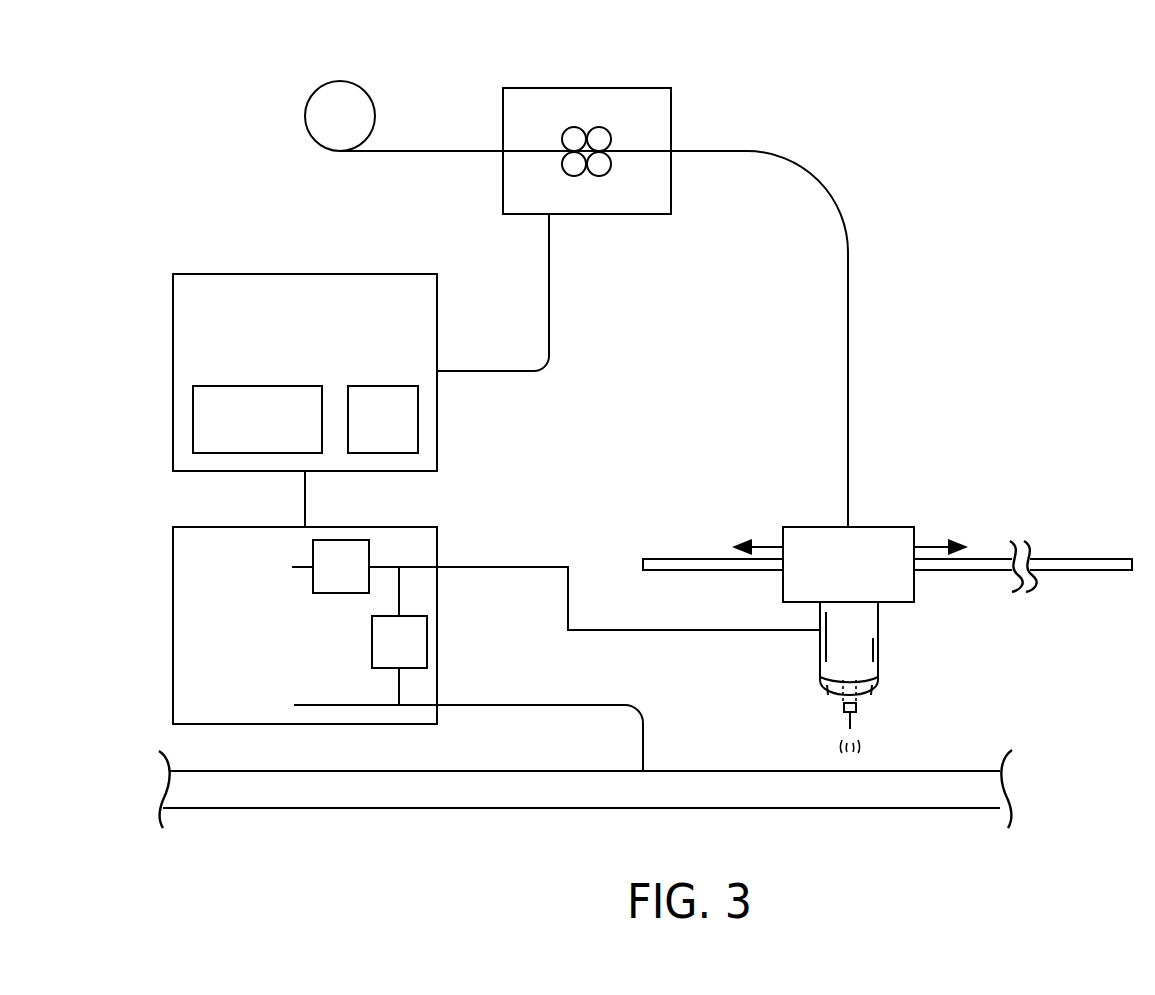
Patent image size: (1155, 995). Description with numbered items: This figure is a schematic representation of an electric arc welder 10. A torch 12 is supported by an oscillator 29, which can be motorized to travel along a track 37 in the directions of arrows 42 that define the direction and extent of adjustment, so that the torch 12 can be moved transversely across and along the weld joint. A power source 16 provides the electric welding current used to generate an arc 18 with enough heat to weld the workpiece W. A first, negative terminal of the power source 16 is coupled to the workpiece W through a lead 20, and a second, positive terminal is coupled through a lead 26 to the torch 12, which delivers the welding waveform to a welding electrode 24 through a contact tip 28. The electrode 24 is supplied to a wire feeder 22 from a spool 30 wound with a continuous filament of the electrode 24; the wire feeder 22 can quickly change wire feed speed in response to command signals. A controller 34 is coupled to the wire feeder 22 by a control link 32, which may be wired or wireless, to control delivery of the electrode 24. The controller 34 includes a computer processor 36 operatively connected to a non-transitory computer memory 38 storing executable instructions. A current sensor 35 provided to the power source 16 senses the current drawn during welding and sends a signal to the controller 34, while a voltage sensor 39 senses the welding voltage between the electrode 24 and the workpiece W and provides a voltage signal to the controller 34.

The electric arc welder 10 is at (143, 176).
The torch 12 is at (878, 635).
The power source 16 is at (184, 564).
The arc 18 is at (840, 745).
The lead 20 is at (588, 704).
The wire feeder 22 is at (512, 124).
The welding electrode 24 is at (852, 720).
The lead 26 is at (528, 565).
The contact tip 28 is at (844, 710).
The oscillator 29 is at (795, 583).
The spool 30 is at (312, 104).
The control link 32 is at (549, 290).
The controller 34 is at (184, 314).
The current sensor 35 is at (340, 540).
The computer processor 36 is at (418, 405).
The track 37 is at (685, 565).
The computer memory 38 is at (193, 404).
The voltage sensor 39 is at (427, 642).
The arrows 42 is at (765, 545).
The workpiece W is at (538, 770).